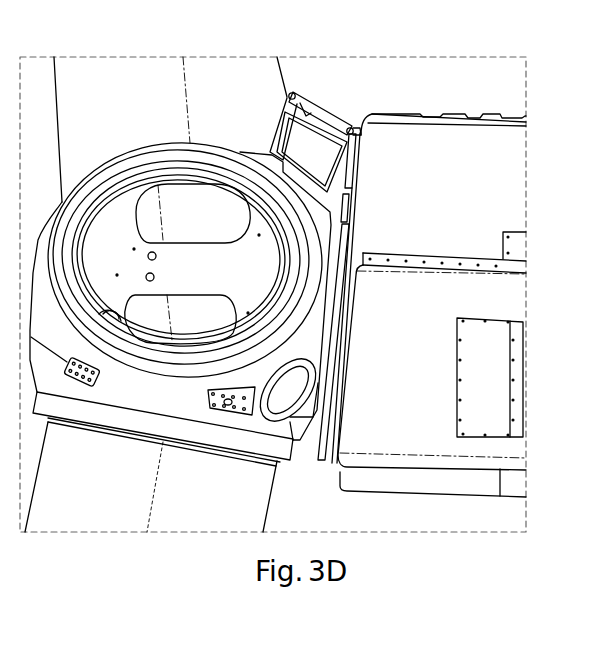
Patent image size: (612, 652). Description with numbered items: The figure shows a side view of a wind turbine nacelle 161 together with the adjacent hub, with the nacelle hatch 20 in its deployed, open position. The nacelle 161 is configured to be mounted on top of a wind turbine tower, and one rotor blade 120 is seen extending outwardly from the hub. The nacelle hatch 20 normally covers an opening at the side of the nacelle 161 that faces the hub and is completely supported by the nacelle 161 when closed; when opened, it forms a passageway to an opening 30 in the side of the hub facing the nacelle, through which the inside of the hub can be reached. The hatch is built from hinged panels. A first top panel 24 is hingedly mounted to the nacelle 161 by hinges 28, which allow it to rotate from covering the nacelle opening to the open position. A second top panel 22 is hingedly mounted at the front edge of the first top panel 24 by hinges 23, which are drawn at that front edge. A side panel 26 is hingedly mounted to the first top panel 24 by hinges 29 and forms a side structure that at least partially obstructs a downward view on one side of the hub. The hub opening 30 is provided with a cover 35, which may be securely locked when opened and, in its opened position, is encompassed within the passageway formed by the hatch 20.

The rotor blade 120 is at (108, 70).
The nacelle hatch 20 is at (320, 96).
The second top panel 22 is at (270, 135).
The hinges 23 is at (291, 92).
The first top panel 24 is at (307, 102).
The side panel 26 is at (352, 128).
The hinges 28 is at (360, 124).
The hinges 29 is at (337, 147).
The opening 30 is at (287, 440).
The cover 35 is at (252, 416).
The nacelle 161 is at (508, 137).